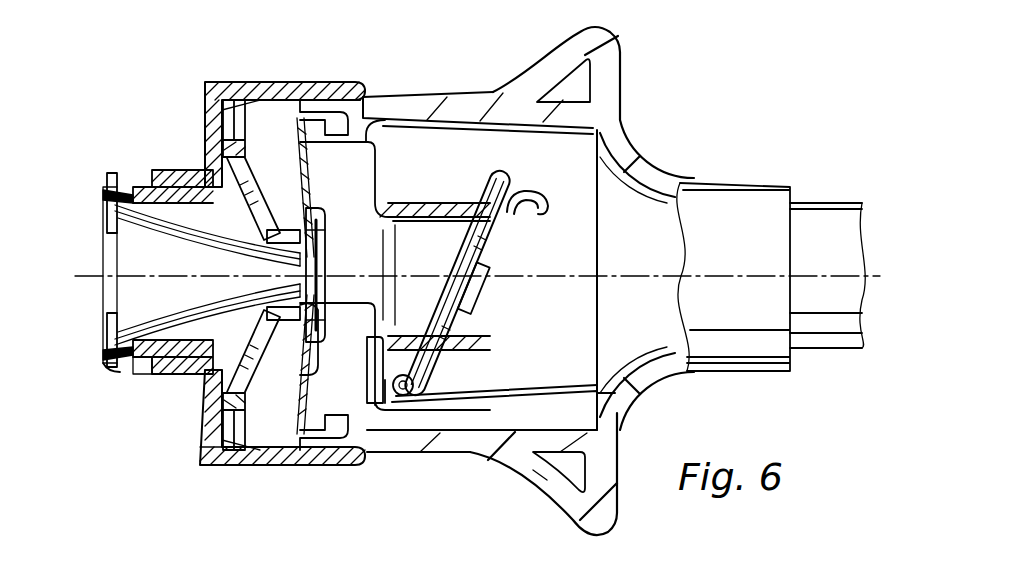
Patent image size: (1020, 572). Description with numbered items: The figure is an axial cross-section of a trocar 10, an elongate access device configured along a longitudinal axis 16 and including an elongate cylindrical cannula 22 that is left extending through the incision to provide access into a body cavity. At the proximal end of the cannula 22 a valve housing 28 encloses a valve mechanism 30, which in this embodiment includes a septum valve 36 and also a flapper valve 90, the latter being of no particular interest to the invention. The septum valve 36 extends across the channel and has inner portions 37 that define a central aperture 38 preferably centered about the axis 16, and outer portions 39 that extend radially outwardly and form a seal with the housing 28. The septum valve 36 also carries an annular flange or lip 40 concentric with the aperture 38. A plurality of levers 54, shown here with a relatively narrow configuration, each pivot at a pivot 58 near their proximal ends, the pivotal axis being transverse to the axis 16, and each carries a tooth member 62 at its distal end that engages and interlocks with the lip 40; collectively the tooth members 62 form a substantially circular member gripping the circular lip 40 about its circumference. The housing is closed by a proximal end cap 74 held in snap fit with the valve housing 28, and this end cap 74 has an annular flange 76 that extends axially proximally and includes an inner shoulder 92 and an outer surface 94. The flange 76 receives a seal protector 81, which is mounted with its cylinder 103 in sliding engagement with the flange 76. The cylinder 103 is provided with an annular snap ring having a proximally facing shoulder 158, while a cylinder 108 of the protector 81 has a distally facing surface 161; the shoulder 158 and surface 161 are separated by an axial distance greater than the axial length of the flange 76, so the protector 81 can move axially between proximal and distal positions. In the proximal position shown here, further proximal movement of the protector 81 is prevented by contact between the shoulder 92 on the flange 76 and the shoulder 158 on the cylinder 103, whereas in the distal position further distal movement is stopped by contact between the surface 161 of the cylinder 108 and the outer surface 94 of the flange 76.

The trocar 10 is at (333, 62).
The longitudinal axis 16 is at (537, 272).
The cannula 22 is at (820, 208).
The valve housing 28 is at (530, 75).
The valve mechanism 30 is at (533, 157).
The septum valve 36 is at (322, 93).
The inner portions 37 is at (338, 262).
The aperture 38 is at (318, 288).
The outer portions 39 is at (342, 176).
The annular flange or lip 40 is at (304, 218).
The lever 54 is at (203, 433).
The pivot 58 is at (240, 138).
The tooth member 62 is at (300, 356).
The proximal end cap 74 is at (257, 82).
The annular flange 76 is at (180, 170).
The seal protector 81 is at (90, 252).
The flapper valve 90 is at (462, 338).
The shoulder 92 is at (200, 386).
The outer surface 94 is at (153, 374).
The cylinder 103 is at (143, 170).
The cylinder 108 is at (114, 172).
The proximally facing shoulder 158 is at (200, 167).
The distally facing surface 161 is at (125, 370).